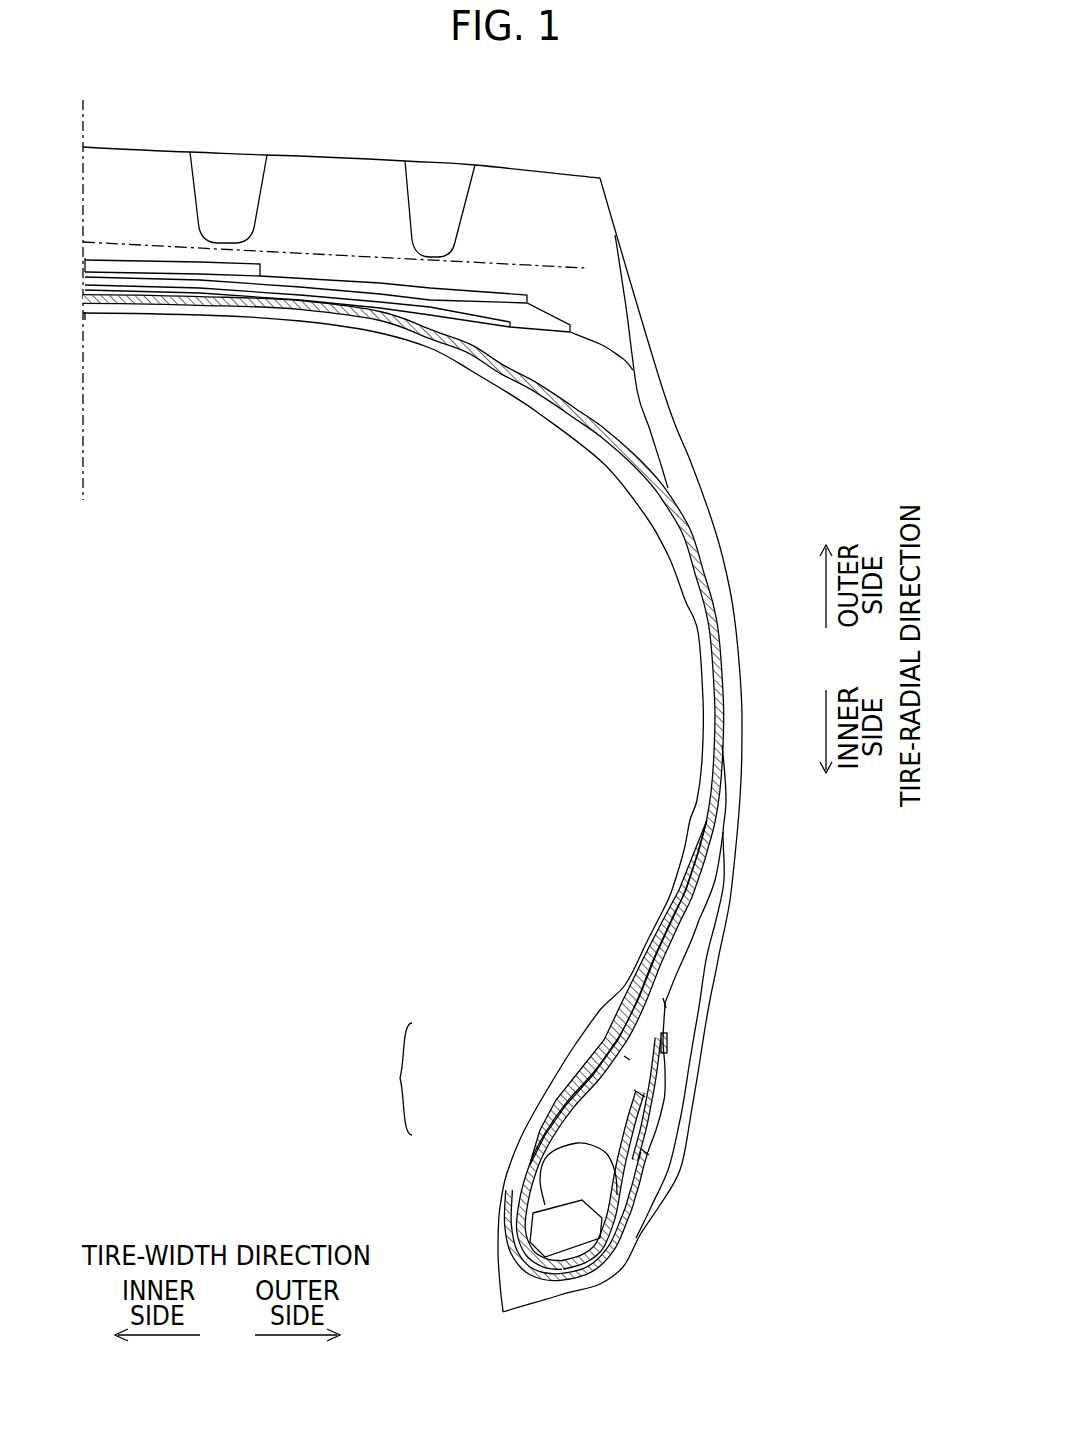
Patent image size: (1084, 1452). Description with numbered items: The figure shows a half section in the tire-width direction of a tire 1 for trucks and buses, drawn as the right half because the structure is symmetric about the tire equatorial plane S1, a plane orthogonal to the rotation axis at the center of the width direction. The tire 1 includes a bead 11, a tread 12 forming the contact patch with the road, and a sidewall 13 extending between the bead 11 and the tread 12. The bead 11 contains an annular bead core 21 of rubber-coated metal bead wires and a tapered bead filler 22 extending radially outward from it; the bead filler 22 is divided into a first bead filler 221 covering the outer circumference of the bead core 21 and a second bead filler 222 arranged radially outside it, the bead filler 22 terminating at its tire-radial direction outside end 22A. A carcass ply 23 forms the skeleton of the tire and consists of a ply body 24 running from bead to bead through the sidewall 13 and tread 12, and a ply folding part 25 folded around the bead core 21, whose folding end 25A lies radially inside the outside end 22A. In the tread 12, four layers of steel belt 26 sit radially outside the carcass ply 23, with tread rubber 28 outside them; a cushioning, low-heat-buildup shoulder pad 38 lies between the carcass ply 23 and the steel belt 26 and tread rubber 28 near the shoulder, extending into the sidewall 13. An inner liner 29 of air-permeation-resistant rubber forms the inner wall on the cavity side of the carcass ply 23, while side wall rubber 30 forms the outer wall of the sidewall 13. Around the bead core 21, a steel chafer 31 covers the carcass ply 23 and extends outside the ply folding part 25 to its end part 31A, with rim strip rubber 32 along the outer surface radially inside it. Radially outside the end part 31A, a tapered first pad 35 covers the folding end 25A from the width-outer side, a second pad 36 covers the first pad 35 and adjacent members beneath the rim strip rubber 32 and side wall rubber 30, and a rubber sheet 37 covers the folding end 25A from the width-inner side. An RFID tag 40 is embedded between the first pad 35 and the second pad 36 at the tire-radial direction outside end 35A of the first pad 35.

The tire 1 is at (795, 112).
The bead 11 is at (776, 1146).
The tread 12 is at (487, 128).
The sidewall 13 is at (728, 481).
The bead core 21 is at (547, 1225).
The bead filler 22 is at (386, 1079).
The first bead filler 221 is at (553, 1173).
The second bead filler 222 is at (627, 1058).
The tire-radial direction outside end of the bead filler 22A is at (710, 917).
The carcass ply 23 is at (627, 427).
The ply body 24 is at (637, 455).
The ply folding part 25 is at (622, 1198).
The folding end 25A is at (645, 1096).
The steel belt 26 is at (138, 265).
The tread rubber 28 is at (565, 190).
The inner liner 29 is at (690, 838).
The side wall rubber 30 is at (730, 833).
The steel chafer 31 is at (592, 1272).
The end part of the steel chafer 31A is at (648, 1155).
The rim strip rubber 32 is at (520, 1293).
The first pad 35 is at (658, 1078).
The tire-radial direction outside end of the first pad 35A is at (665, 1003).
The second pad 36 is at (692, 972).
The rubber sheet 37 is at (649, 1062).
The shoulder pad 38 is at (592, 378).
The RFID tag 40 is at (668, 1043).
The tire equatorial plane S1 is at (88, 452).